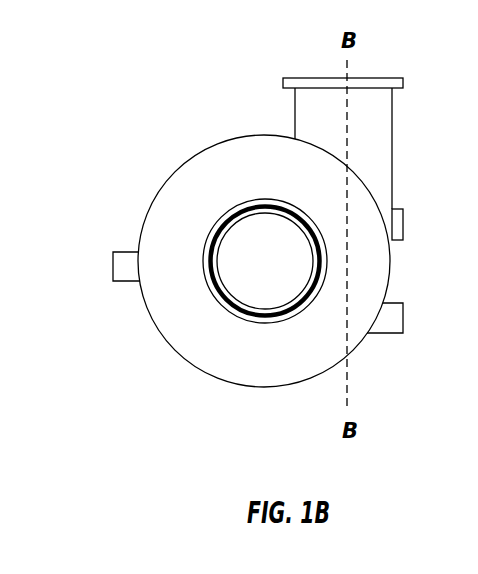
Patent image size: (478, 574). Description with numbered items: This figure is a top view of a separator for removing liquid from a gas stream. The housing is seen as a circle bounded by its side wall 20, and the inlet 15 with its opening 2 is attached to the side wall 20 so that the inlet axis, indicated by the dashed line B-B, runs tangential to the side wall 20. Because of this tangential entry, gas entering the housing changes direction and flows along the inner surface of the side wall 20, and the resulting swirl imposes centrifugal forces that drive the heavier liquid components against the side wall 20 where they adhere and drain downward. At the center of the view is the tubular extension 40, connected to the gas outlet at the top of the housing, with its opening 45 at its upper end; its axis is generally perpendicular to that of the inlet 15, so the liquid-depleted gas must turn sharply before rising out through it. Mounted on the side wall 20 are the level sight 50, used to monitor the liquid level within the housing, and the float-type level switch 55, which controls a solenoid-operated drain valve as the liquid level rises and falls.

The opening 2 is at (381, 67).
The inlet 15 is at (392, 128).
The side wall 20 is at (390, 264).
The tubular extension 40 is at (212, 228).
The opening 45 is at (280, 274).
The level sight 50 is at (111, 276).
The level switch 55 is at (403, 318).